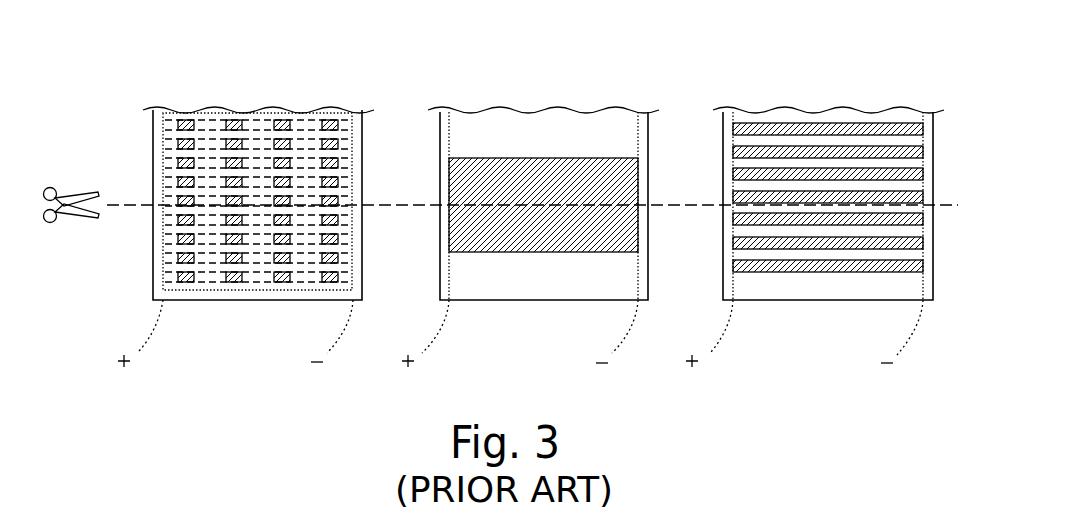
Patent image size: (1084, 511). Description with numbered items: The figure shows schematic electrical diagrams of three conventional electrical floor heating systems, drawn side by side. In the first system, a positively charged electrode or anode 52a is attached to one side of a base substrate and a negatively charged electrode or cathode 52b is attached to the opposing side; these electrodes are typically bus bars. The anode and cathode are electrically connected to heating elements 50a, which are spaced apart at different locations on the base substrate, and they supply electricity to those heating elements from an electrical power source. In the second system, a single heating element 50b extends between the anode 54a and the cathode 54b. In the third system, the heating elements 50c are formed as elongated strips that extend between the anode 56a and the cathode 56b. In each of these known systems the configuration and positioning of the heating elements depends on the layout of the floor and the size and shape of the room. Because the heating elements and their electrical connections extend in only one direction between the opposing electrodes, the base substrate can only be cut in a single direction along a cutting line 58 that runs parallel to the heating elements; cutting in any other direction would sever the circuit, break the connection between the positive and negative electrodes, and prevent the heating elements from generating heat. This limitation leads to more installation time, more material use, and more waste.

The heating elements 50a is at (277, 158).
The single heating element 50b is at (560, 171).
The heating elements formed as elongated strips 50c is at (845, 174).
The anode 52a is at (168, 263).
The cathode 52b is at (347, 256).
The anode 54a is at (451, 262).
The cathode 54b is at (635, 262).
The anode 56a is at (738, 252).
The cathode 56b is at (918, 253).
The cutting line 58 is at (413, 203).